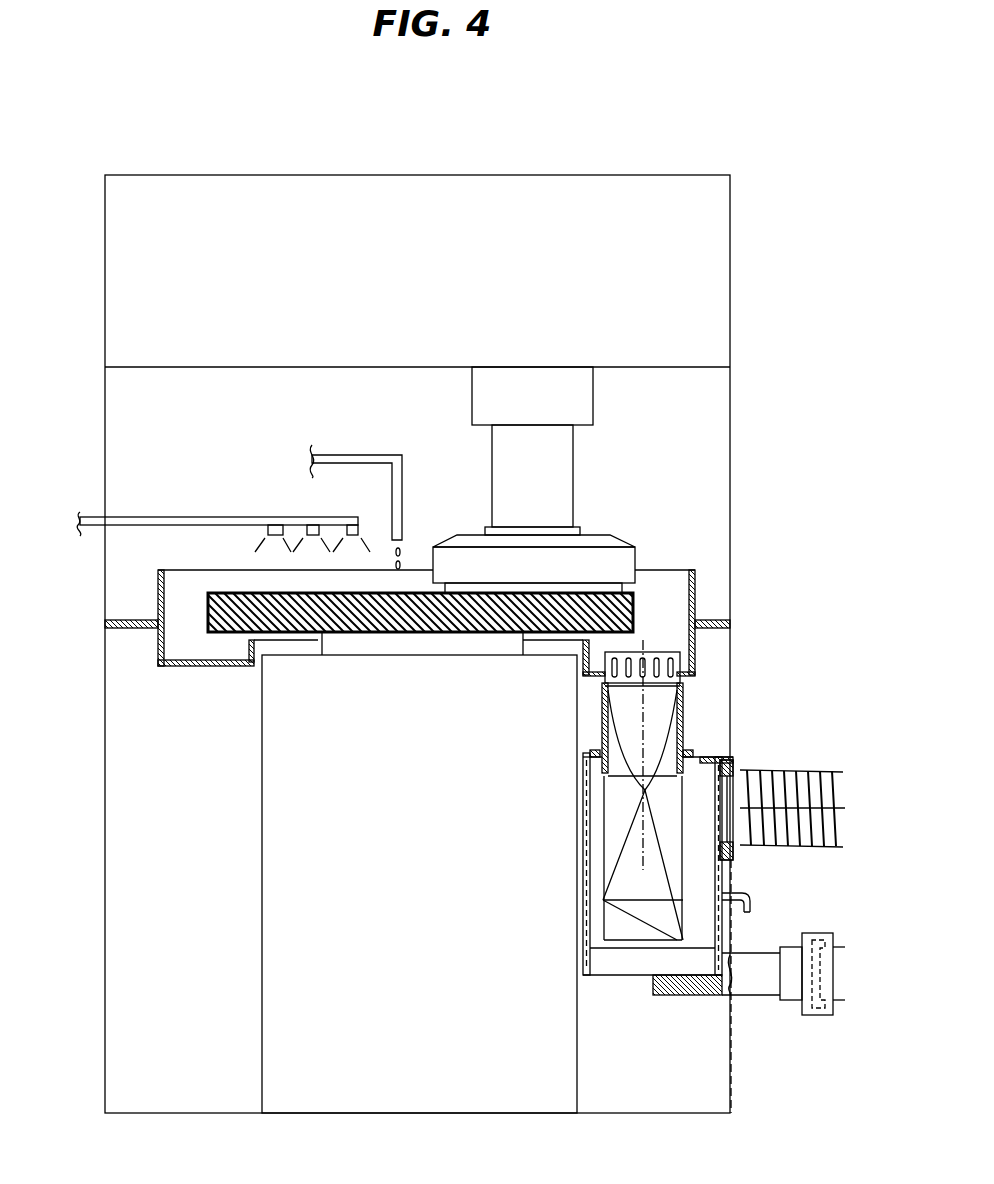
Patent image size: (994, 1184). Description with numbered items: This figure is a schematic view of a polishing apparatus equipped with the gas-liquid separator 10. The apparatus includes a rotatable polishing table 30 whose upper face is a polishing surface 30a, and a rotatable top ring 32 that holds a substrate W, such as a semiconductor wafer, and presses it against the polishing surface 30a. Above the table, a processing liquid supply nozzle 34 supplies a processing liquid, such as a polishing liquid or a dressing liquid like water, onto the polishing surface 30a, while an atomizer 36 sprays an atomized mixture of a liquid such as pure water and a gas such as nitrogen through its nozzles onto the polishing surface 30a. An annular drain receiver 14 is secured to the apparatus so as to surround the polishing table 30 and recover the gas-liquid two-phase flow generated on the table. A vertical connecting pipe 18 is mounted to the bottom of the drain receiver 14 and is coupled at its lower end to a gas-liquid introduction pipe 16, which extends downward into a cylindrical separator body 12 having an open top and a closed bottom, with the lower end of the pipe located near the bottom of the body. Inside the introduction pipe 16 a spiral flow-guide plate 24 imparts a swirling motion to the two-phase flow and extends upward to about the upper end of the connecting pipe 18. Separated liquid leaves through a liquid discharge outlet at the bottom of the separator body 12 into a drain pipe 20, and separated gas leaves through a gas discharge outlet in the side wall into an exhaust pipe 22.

The gas-liquid separator 10 is at (718, 692).
The separator body 12 is at (590, 905).
The drain receiver 14 is at (697, 571).
The gas-liquid introduction pipe 16 is at (600, 822).
The connecting pipe 18 is at (604, 727).
The drain pipe 20 is at (762, 997).
The exhaust pipe 22 is at (812, 848).
The spiral flow-guide plate 24 is at (683, 735).
The polishing table 30 is at (378, 634).
The polishing surface 30a is at (237, 593).
The top ring 32 is at (613, 550).
The processing liquid supply nozzle 34 is at (386, 453).
The atomizer 36 is at (170, 516).
The substrate W is at (608, 590).